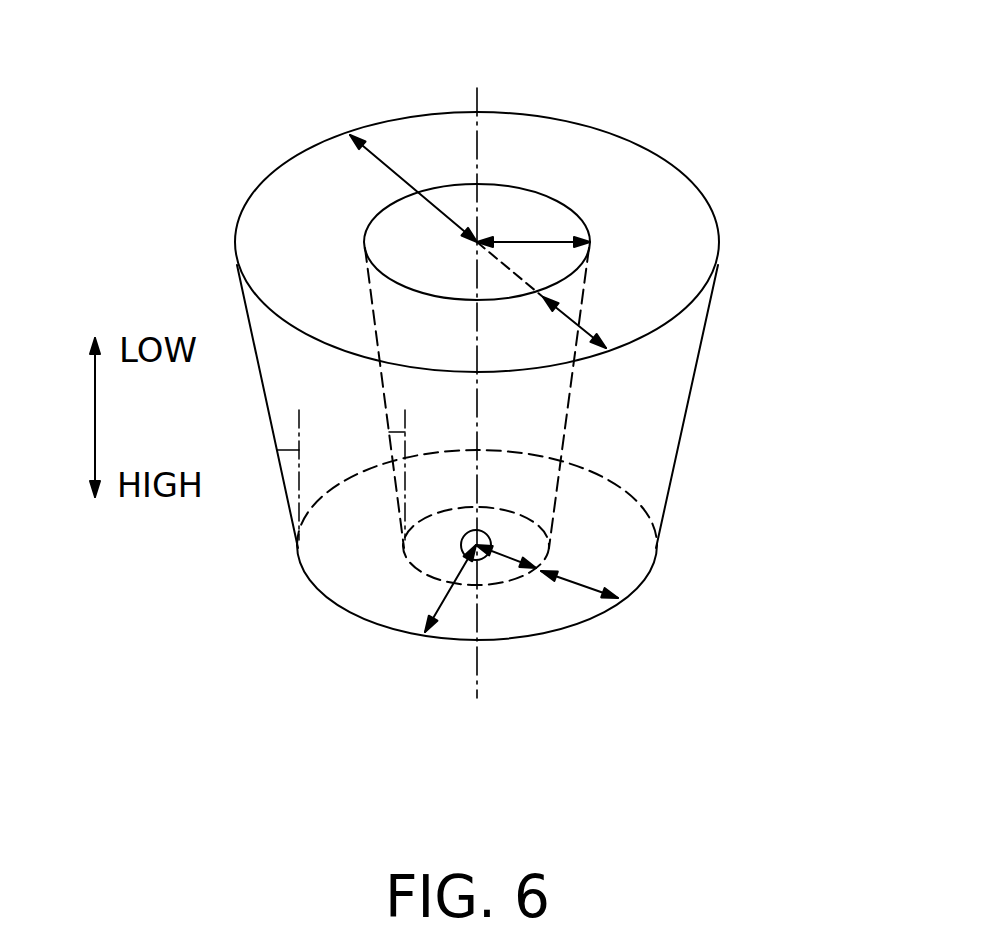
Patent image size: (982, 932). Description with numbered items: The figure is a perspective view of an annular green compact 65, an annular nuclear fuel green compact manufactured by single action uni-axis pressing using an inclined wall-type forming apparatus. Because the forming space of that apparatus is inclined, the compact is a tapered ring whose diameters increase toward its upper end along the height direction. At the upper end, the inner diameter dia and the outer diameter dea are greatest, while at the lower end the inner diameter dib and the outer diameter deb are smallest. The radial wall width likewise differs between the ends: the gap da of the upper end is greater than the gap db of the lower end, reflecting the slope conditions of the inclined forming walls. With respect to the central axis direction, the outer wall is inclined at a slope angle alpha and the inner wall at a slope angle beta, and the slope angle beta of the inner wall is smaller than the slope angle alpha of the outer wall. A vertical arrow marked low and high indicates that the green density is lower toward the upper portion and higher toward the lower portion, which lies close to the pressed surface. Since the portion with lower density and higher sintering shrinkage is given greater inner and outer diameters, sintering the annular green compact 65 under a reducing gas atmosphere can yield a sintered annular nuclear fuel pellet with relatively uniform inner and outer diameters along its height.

The annular green compact 65 is at (690, 324).
The outer diameter of the upper end dea is at (400, 172).
The inner diameter of the upper end dia is at (533, 240).
The gap of the upper end da is at (590, 330).
The outer diameter of the lower end deb is at (440, 599).
The inner diameter of the lower end dib is at (504, 562).
The gap of the lower end db is at (578, 588).
The slope angle of the outer wall alpha is at (283, 460).
The slope angle of the inner wall beta is at (390, 452).